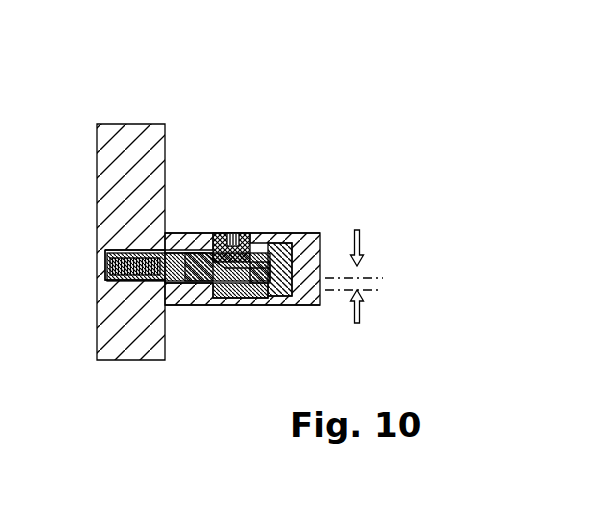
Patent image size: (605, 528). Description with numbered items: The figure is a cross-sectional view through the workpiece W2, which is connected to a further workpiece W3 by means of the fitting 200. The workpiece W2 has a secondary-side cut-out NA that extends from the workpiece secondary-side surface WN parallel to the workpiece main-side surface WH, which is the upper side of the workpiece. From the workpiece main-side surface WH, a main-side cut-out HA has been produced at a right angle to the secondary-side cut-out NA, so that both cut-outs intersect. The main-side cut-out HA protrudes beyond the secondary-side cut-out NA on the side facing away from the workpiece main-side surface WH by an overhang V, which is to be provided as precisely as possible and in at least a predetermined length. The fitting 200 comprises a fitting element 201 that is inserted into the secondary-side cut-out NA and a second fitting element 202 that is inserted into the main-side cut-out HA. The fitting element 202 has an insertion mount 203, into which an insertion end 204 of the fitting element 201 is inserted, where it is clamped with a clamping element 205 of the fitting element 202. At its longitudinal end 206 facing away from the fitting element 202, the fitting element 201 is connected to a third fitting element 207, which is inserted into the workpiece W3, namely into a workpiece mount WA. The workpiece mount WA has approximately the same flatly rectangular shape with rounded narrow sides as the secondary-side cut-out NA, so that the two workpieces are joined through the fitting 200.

The workpiece W3 is at (172, 136).
The workpiece W2 is at (292, 226).
The workpiece main-side surface WH is at (173, 232).
The workpiece mount WA is at (105, 252).
The workpiece secondary-side surface WN is at (168, 292).
The longitudinal end 206 is at (140, 252).
The third fitting element 207 is at (160, 275).
The fitting element 201 is at (190, 252).
The clamping element 205 is at (242, 235).
The second fitting element 202 is at (226, 290).
The insertion mount 203 is at (282, 290).
The insertion end 204 is at (254, 290).
The fitting 200 is at (275, 228).
The secondary-side cut-out NA is at (188, 300).
The main-side cut-out HA is at (300, 236).
The overhang V is at (382, 279).